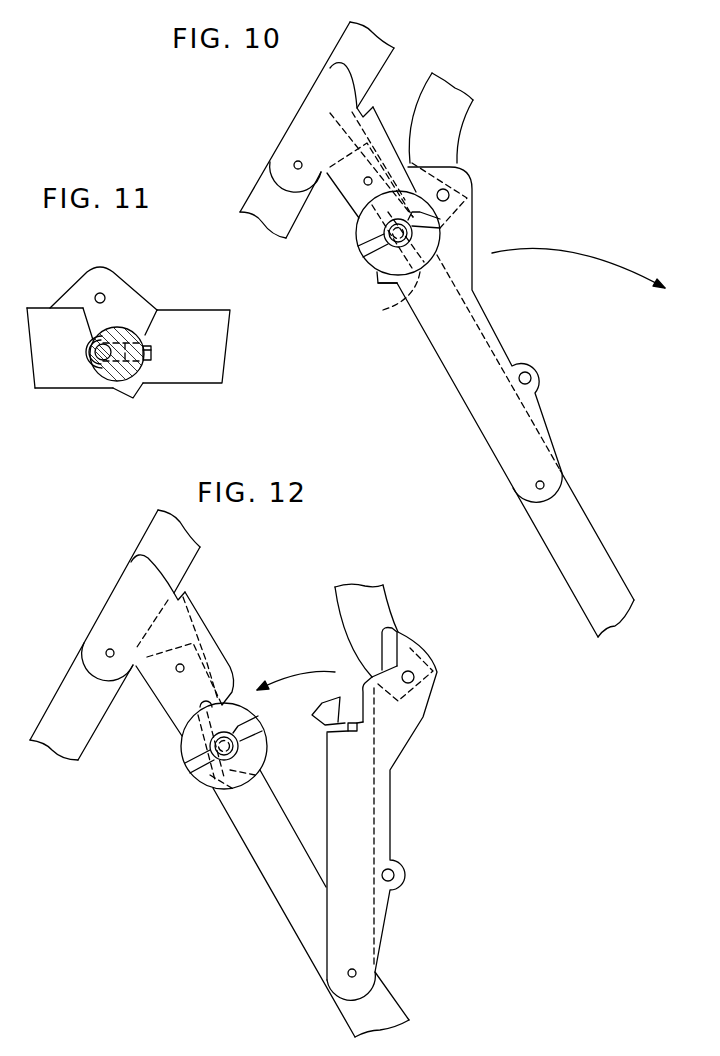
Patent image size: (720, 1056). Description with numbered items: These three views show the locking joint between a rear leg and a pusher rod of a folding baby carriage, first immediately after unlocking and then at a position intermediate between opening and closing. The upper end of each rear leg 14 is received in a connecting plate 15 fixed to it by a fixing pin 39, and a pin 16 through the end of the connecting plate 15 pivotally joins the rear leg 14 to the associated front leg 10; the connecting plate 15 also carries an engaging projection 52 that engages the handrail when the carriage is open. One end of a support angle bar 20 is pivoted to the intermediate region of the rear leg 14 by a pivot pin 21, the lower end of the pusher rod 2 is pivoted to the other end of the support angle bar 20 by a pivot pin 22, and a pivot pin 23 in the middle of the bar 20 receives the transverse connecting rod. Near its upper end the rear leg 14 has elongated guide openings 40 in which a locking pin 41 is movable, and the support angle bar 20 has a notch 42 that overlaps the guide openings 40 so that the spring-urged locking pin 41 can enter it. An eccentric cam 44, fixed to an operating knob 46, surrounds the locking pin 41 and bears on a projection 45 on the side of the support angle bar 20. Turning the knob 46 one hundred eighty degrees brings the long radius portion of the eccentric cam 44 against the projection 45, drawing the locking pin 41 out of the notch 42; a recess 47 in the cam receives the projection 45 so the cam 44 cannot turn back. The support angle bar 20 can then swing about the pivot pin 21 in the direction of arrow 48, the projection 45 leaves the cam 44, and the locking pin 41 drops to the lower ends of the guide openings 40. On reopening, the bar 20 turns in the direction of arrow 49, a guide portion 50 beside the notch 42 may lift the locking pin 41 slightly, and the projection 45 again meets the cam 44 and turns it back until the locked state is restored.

In FIG. 10, the pusher rod 2 is at (466, 108).
In FIG. 12, the pusher rod 2 is at (384, 592).
In FIG. 10, the front leg 10 is at (267, 192).
In FIG. 12, the front leg 10 is at (68, 694).
In FIG. 10, the rear leg 14 is at (556, 558).
In FIG. 12, the rear leg 14 is at (288, 917).
In FIG. 10, the connecting plate 15 is at (299, 110).
In FIG. 11, the connecting plate 15 is at (52, 380).
In FIG. 12, the connecting plate 15 is at (122, 590).
In FIG. 10, the pin 16 is at (292, 160).
In FIG. 12, the pin 16 is at (100, 655).
In FIG. 10, the support angle bar 20 is at (457, 381).
In FIG. 11, the support angle bar 20 is at (208, 383).
In FIG. 12, the support angle bar 20 is at (390, 800).
In FIG. 10, the pivot pin 21 is at (536, 487).
In FIG. 12, the pivot pin 21 is at (345, 978).
In FIG. 10, the pivot pin 22 is at (450, 194).
In FIG. 11, the pivot pin 22 is at (106, 297).
In FIG. 12, the pivot pin 22 is at (432, 678).
In FIG. 10, the pivot pin 23 is at (532, 378).
In FIG. 12, the pivot pin 23 is at (397, 876).
In FIG. 10, the fixing pin 39 is at (364, 183).
In FIG. 12, the fixing pin 39 is at (176, 670).
In FIG. 11, the elongated guide openings 40 is at (89, 376).
In FIG. 12, the elongated guide openings 40 is at (200, 708).
In FIG. 10, the locking pin 41 is at (357, 235).
In FIG. 11, the locking pin 41 is at (88, 340).
In FIG. 12, the locking pin 41 is at (205, 757).
In FIG. 10, the notch 42 is at (440, 238).
In FIG. 11, the notch 42 is at (136, 398).
In FIG. 12, the notch 42 is at (363, 694).
In FIG. 10, the eccentric cam 44 is at (450, 222).
In FIG. 11, the eccentric cam 44 is at (129, 327).
In FIG. 12, the eccentric cam 44 is at (223, 797).
In FIG. 10, the projection 45 is at (366, 307).
In FIG. 11, the projection 45 is at (153, 357).
In FIG. 12, the projection 45 is at (327, 732).
In FIG. 10, the operating knob 46 is at (358, 254).
In FIG. 12, the operating knob 46 is at (198, 783).
In FIG. 10, the recess 47 is at (418, 287).
In FIG. 11, the recess 47 is at (155, 350).
In FIG. 12, the recess 47 is at (264, 768).
In FIG. 10, the arrow 48 is at (580, 252).
In FIG. 12, the arrow 49 is at (305, 672).
In FIG. 12, the guide portion 50 is at (322, 703).
In FIG. 10, the engaging projection 52 is at (370, 104).
In FIG. 12, the engaging projection 52 is at (188, 592).